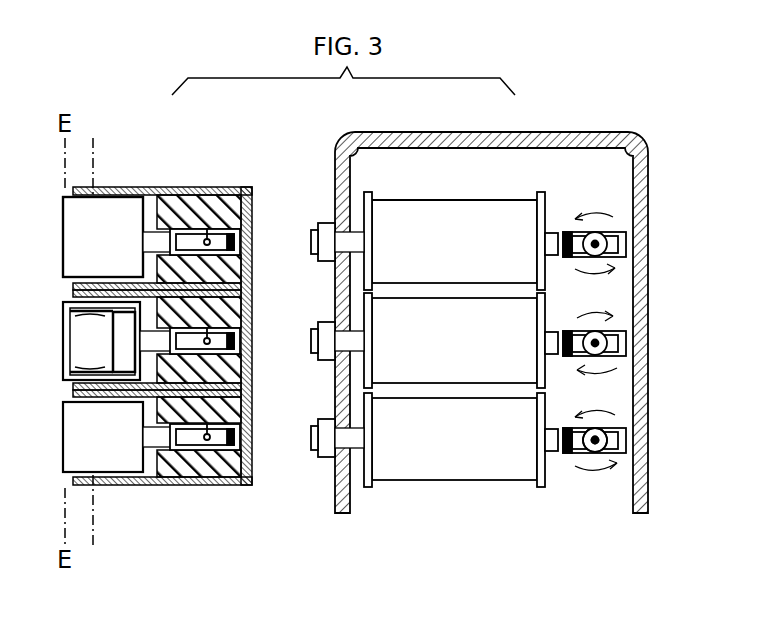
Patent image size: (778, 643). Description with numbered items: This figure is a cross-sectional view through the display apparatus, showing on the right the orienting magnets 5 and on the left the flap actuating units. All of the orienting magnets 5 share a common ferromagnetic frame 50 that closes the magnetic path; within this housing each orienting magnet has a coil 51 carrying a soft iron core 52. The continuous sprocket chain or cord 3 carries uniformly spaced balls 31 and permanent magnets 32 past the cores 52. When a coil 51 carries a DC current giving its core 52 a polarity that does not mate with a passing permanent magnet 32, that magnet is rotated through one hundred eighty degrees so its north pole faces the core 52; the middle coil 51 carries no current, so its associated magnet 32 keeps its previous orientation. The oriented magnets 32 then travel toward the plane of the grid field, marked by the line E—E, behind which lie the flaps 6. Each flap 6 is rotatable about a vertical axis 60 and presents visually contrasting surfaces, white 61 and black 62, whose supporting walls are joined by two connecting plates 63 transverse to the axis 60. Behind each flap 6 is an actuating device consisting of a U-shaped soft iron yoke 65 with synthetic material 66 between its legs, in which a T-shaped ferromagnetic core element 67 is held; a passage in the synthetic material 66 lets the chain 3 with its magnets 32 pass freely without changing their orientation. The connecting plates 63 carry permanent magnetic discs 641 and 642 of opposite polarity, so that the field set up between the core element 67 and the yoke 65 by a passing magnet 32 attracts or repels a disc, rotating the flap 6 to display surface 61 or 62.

The cord 3 is at (598, 453).
The orienting magnet 5 is at (400, 202).
The flap 6 is at (75, 212).
The ball 31 is at (591, 451).
The permanent magnet 32 is at (237, 242).
The ferromagnetic frame 50 is at (398, 148).
The coil 51 is at (455, 256).
The soft iron core 52 is at (314, 258).
The rotatable axis 60 is at (93, 147).
The white display surface 61 is at (100, 353).
The black display surface 62 is at (118, 255).
The connecting plate 63 is at (73, 301).
The U-shaped soft iron yoke 65 is at (246, 188).
The synthetic material 66 is at (198, 200).
The T-shaped core element 67 is at (153, 231).
The permanent magnetic disc 641 is at (72, 368).
The permanent magnetic disc 642 is at (72, 312).